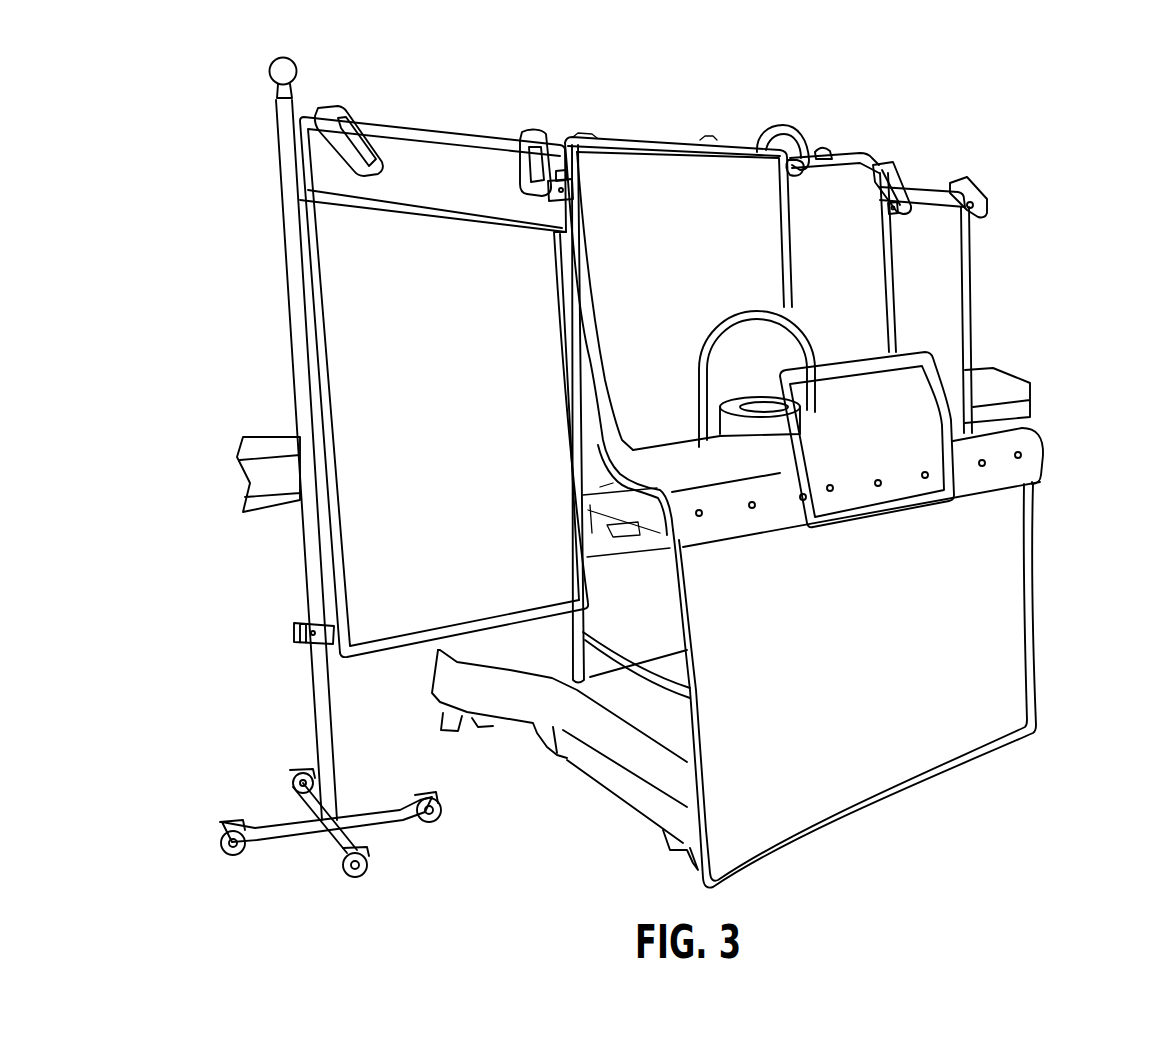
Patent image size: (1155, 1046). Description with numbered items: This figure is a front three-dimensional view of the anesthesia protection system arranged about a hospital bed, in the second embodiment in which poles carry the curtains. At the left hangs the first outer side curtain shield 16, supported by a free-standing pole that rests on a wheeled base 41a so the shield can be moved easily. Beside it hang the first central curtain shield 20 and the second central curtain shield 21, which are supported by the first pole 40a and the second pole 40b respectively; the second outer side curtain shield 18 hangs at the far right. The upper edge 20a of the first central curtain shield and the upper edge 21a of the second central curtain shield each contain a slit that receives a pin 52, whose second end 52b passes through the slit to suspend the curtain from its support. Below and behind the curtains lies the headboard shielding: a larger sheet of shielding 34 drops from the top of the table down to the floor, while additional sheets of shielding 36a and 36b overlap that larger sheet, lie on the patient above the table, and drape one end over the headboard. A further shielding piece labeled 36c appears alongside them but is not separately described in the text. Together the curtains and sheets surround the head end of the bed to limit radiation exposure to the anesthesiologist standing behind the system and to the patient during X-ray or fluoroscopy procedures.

The first outer side curtain shield 16 is at (375, 327).
The second outer side curtain shield 18 is at (940, 270).
The first central curtain shield 20 is at (637, 217).
The upper edge of first central curtain shield 20a is at (610, 140).
The second central curtain shield 21 is at (830, 187).
The upper edge of second central curtain shield 21a is at (820, 147).
The larger sheet of shielding 34 is at (973, 655).
The sheet of shielding 36a is at (767, 510).
The sheet of shielding 36b is at (1017, 440).
The rail flap panel 36c is at (893, 473).
The first pole 40a is at (480, 212).
The second pole 40b is at (897, 190).
The wheeled base 41a is at (277, 830).
The pin 52 is at (757, 147).
The second end of pin 52b is at (803, 172).